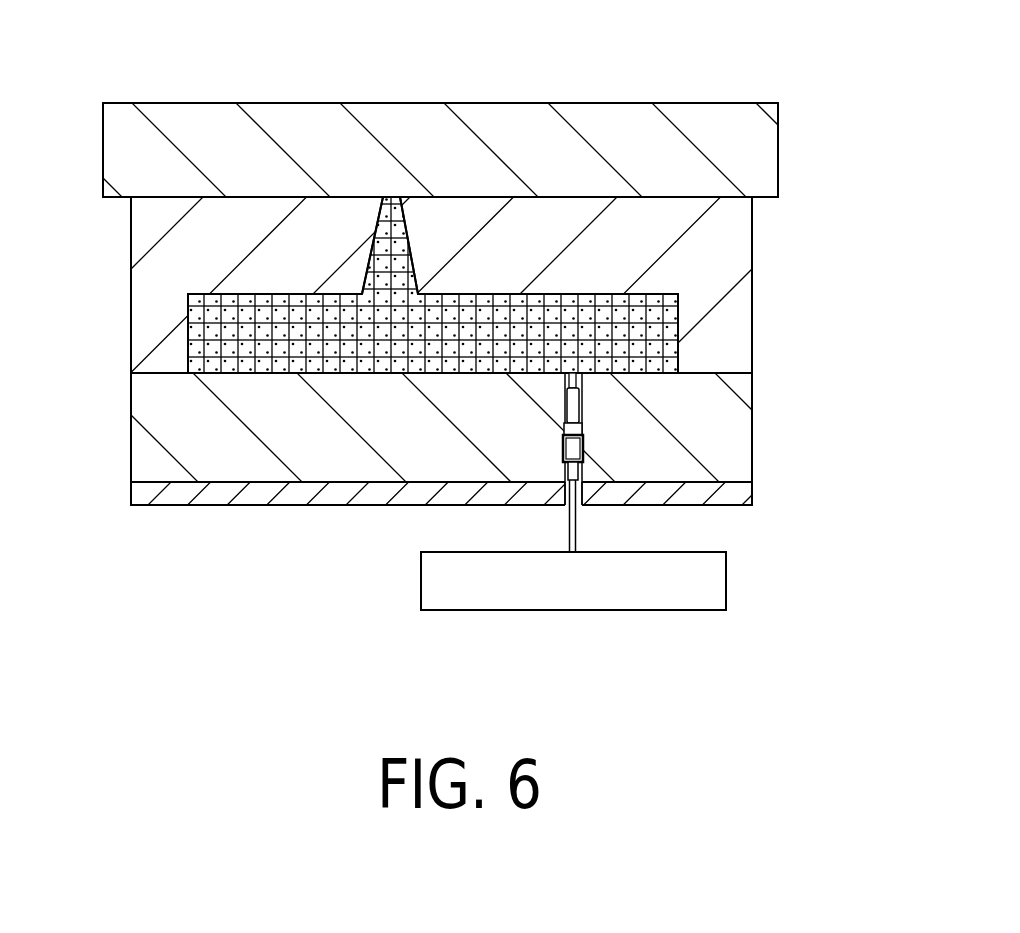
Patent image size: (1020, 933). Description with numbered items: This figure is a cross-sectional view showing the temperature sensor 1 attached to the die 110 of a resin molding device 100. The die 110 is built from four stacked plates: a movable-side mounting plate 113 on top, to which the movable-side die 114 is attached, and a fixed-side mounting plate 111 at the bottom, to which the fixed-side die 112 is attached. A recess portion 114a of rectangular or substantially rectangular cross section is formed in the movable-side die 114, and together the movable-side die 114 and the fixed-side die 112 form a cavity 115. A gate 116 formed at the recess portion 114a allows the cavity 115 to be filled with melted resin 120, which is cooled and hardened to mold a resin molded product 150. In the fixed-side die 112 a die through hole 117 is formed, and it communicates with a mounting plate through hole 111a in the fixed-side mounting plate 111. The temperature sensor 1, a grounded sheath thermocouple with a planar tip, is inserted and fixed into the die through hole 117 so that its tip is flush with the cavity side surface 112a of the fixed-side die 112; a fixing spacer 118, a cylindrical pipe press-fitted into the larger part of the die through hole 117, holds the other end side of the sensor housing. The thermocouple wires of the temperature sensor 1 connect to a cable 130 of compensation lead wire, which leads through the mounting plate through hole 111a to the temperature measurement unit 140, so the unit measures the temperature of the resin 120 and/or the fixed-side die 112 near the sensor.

The temperature sensor 1 is at (538, 426).
The resin molding device 100 is at (745, 83).
The die 110 is at (110, 327).
The fixed-side mounting plate 111 is at (737, 500).
The mounting plate through hole 111a is at (567, 497).
The fixed-side die 112 is at (738, 433).
The cavity side surface 112a is at (275, 373).
The movable-side mounting plate 113 is at (750, 153).
The movable-side die 114 is at (737, 245).
The recess portion 114a is at (233, 296).
The cavity 115 is at (190, 353).
The gate 116 is at (402, 217).
The die through hole 117 is at (572, 400).
The fixing spacer 118 is at (567, 462).
The resin 120 is at (530, 285).
The resin molded product 150 is at (658, 330).
The cable 130 is at (576, 525).
The temperature measurement unit 140 is at (450, 612).